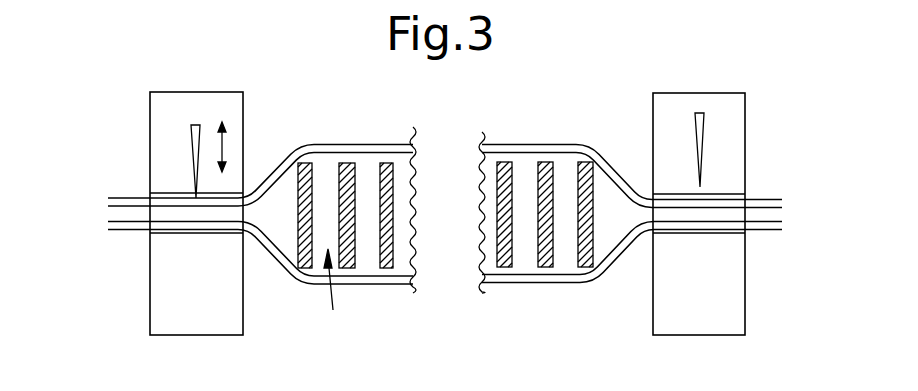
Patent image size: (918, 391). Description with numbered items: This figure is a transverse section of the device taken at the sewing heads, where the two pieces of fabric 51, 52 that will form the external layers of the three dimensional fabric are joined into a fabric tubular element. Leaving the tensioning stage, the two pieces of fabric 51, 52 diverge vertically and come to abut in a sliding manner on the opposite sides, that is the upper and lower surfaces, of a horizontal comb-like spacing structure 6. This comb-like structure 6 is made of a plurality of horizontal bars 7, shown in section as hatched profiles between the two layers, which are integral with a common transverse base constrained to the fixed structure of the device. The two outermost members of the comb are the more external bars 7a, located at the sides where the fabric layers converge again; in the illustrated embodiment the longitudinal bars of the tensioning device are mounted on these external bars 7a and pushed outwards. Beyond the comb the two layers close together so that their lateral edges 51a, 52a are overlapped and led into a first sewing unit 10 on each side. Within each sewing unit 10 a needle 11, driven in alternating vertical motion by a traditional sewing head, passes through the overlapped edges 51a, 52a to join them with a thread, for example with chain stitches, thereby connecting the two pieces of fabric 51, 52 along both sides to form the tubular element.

The first sewing unit 10 is at (168, 115).
The needle 11 is at (192, 145).
The piece of fabric 51 is at (337, 146).
The piece of fabric 52 is at (377, 281).
The lateral edge 51a is at (121, 198).
The lateral edge 52a is at (122, 226).
The bar 7 is at (540, 249).
The external bar 7a is at (305, 262).
The comb-like structure 6 is at (332, 297).